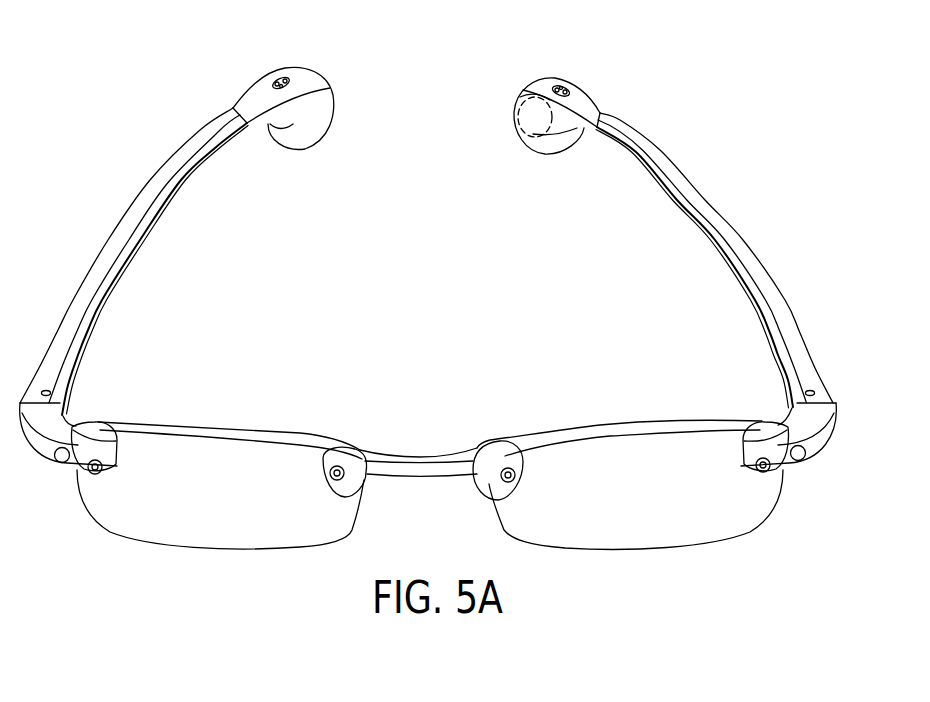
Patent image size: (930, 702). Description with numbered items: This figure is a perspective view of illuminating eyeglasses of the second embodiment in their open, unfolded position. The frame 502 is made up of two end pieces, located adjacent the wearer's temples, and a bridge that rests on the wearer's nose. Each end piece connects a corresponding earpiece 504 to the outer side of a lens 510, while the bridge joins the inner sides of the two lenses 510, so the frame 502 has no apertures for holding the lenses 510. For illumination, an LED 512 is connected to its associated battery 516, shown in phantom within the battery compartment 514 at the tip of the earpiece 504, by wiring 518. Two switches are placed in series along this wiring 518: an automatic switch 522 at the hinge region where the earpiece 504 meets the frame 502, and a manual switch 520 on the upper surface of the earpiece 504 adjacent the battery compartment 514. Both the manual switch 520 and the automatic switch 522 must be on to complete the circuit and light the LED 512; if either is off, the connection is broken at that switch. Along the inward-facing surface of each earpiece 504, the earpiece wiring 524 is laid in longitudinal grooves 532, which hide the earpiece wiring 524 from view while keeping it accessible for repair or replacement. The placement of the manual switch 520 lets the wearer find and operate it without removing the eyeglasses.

The frame 502 is at (53, 430).
The earpiece 504 is at (105, 262).
The lens 510 is at (213, 533).
The LED 512 is at (62, 463).
The battery compartment 514 is at (317, 110).
The battery 516 is at (522, 78).
The wiring 518 is at (191, 170).
The manual switch 520 is at (277, 79).
The automatic switch 522 is at (73, 401).
The earpiece wiring 524 is at (428, 265).
The longitudinal groove 532 is at (428, 265).